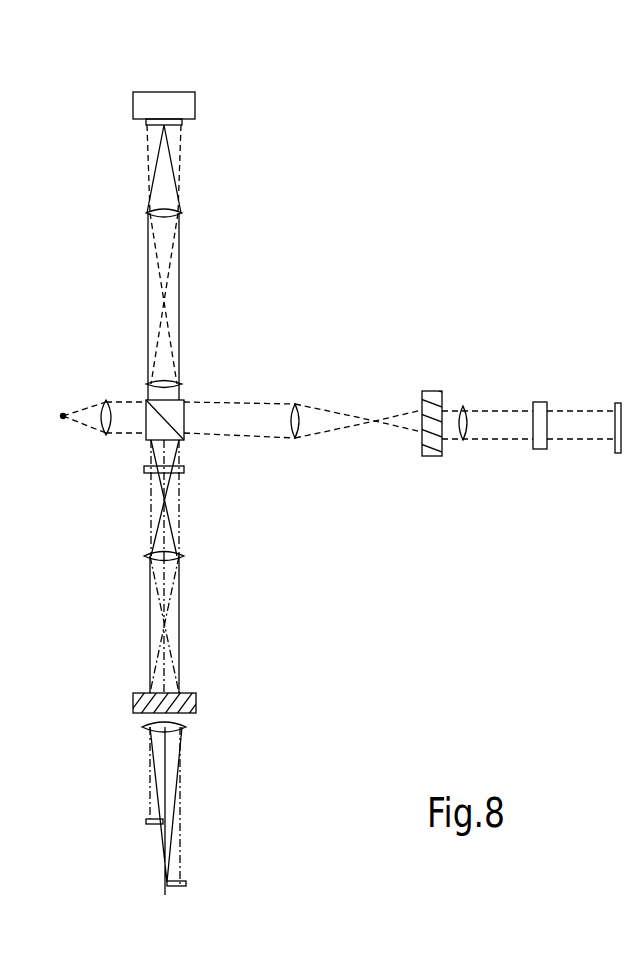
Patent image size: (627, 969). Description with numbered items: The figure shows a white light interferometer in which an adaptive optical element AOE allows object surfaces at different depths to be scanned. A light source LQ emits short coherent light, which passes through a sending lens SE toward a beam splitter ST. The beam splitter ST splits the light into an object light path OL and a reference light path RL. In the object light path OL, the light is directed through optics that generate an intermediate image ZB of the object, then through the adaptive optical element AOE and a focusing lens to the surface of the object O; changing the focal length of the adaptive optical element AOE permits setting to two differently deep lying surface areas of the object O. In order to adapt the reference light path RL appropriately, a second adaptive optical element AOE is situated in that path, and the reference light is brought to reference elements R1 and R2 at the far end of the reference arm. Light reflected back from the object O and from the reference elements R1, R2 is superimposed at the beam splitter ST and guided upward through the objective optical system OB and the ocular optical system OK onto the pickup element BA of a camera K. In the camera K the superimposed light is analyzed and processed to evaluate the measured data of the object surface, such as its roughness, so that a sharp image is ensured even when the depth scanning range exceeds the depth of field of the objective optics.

The camera K is at (196, 103).
The pickup element BA is at (181, 127).
The ocular optical system OK is at (184, 213).
The objective optical system OB is at (184, 384).
The beam splitter ST is at (147, 403).
The light source LQ is at (62, 420).
The collimating lens SE is at (104, 438).
The intermediate image ZB is at (186, 469).
The object light path OL is at (130, 555).
The adaptive optical element AOE is at (432, 390).
The reference light path RL is at (366, 452).
The reflector 1 R1 is at (540, 450).
The reflector 2 R2 is at (618, 455).
The object O is at (163, 883).